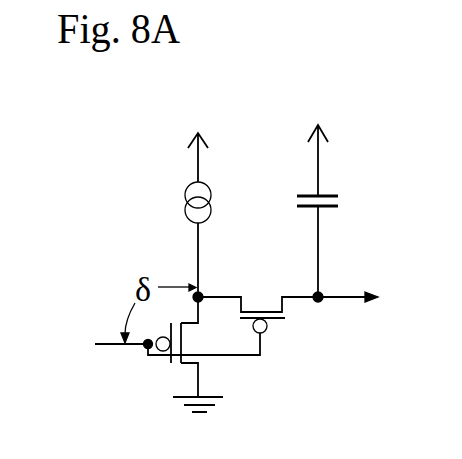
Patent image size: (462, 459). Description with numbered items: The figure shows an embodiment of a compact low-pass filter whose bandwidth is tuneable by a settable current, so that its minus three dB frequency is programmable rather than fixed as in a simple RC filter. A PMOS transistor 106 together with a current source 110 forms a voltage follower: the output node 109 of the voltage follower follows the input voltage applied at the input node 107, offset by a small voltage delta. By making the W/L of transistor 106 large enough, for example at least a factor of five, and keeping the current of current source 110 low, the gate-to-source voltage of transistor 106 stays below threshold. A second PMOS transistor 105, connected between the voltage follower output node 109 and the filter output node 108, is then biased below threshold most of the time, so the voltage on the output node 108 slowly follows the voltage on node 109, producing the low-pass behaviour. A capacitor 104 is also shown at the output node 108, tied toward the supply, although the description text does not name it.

The capacitor 104 is at (340, 197).
The PMOS transistor 105 is at (281, 322).
The PMOS transistor 106 is at (170, 363).
The input node 107 is at (110, 344).
The output node 108 is at (355, 295).
The output node 109 is at (229, 296).
The current source 110 is at (209, 199).